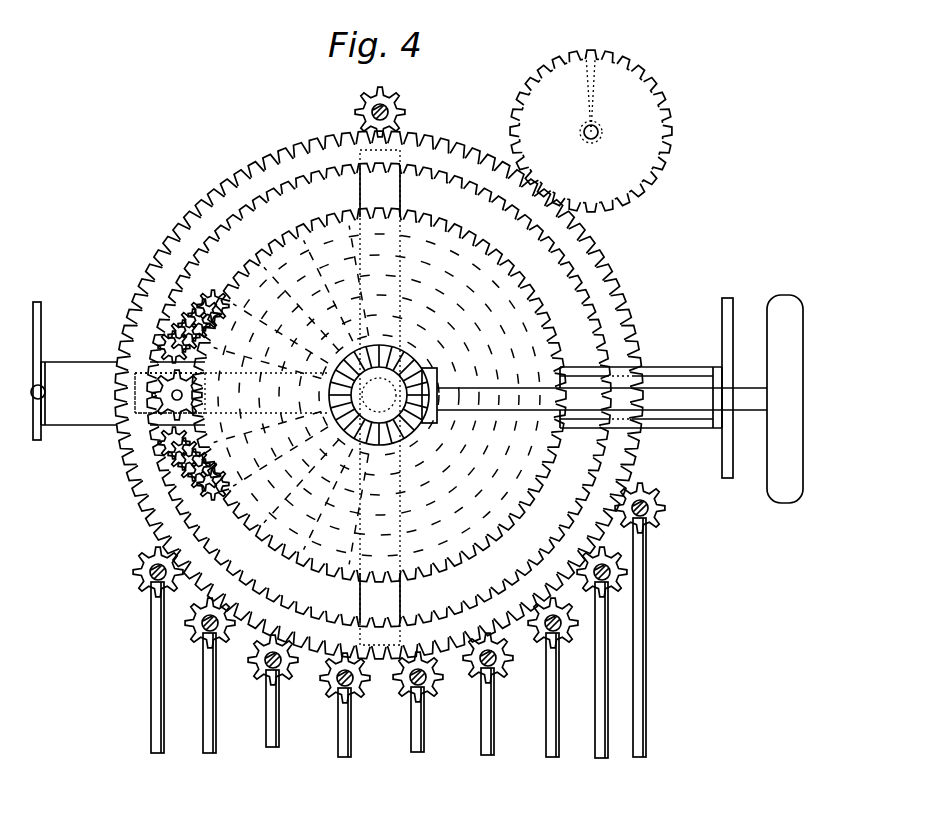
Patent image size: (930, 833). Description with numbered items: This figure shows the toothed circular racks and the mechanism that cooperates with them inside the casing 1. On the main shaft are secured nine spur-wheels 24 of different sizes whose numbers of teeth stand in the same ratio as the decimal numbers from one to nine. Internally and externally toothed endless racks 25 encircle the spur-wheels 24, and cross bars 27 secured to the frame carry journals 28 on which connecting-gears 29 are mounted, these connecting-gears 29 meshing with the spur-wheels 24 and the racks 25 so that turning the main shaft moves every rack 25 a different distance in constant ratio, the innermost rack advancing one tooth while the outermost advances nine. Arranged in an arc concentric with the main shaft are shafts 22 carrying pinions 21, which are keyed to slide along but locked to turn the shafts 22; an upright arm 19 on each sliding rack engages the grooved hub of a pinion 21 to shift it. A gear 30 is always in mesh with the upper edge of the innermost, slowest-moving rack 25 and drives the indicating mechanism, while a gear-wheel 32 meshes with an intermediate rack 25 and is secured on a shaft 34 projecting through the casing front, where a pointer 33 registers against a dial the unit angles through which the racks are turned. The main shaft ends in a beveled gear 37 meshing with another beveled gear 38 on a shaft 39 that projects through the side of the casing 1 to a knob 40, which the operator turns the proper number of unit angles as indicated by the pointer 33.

The casing 1 is at (44, 371).
The upright arm 19 is at (266, 722).
The pinion 21 is at (648, 596).
The shaft 22 is at (330, 686).
The spur-wheel 24 is at (367, 395).
The endless rack 25 is at (607, 298).
The cross bar 27 is at (123, 393).
The journal 28 is at (176, 397).
The connecting-gear 29 is at (174, 338).
The gear 30 is at (397, 108).
The gear-wheel 32 is at (669, 151).
The pointer 33 is at (584, 102).
The shaft 34 is at (600, 131).
The beveled gear 37 is at (394, 446).
The beveled gear 38 is at (426, 425).
The shaft 39 is at (677, 398).
The knob 40 is at (762, 382).